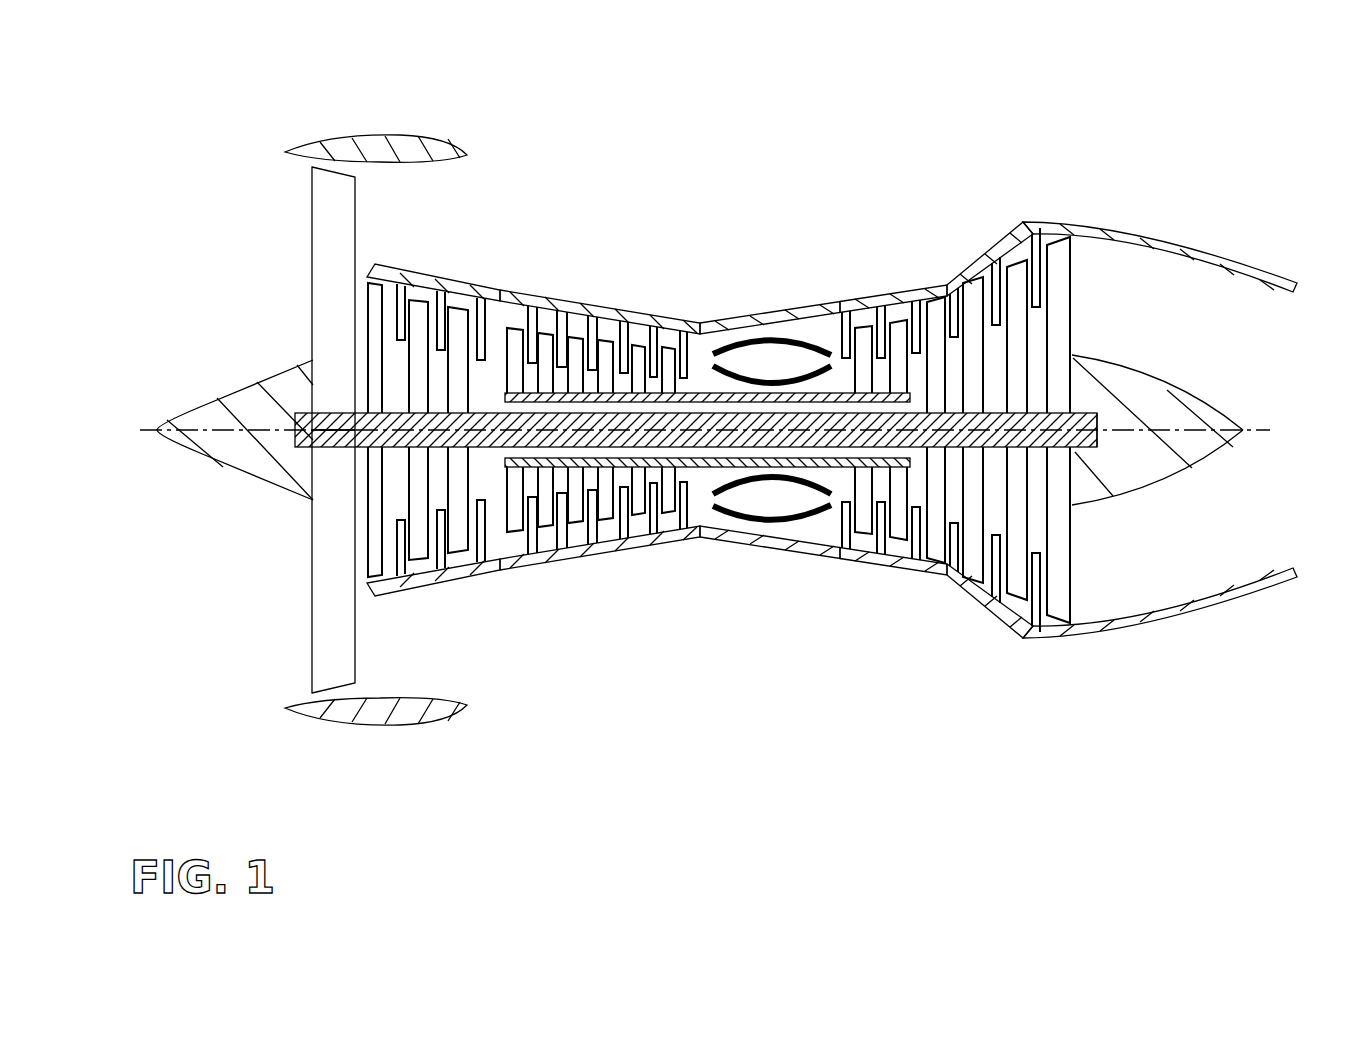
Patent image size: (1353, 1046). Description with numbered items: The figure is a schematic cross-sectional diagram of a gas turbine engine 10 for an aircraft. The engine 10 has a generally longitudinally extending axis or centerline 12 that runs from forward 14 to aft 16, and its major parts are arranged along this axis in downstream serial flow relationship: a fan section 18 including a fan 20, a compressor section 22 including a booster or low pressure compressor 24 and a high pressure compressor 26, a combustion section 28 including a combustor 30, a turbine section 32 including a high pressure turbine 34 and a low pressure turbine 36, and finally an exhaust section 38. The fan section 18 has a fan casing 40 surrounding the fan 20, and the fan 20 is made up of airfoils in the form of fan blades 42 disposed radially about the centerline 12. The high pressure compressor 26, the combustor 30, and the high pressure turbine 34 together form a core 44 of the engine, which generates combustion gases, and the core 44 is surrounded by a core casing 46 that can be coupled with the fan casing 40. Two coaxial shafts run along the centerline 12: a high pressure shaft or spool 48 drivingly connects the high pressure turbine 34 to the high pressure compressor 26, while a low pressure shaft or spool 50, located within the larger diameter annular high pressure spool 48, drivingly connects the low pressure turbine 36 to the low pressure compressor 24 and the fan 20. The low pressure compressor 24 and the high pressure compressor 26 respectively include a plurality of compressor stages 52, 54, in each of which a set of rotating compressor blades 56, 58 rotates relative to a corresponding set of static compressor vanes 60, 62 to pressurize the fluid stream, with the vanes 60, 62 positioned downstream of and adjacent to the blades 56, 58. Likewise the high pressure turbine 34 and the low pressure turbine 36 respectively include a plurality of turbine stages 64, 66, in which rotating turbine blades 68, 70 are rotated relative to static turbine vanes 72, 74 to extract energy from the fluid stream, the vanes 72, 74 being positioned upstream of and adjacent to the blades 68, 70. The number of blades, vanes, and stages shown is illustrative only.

The gas turbine engine 10 is at (203, 75).
The centerline 12 is at (217, 413).
The forward 14 is at (175, 430).
The aft 16 is at (1232, 430).
The fan section 18 is at (360, 762).
The fan 20 is at (302, 225).
The compressor section 22 is at (364, 762).
The low pressure compressor 24 is at (492, 572).
The high pressure compressor 26 is at (645, 538).
The combustion section 28 is at (853, 762).
The combustor 30 is at (822, 335).
The turbine section 32 is at (1065, 762).
The high pressure turbine 34 is at (838, 568).
The low pressure turbine 36 is at (958, 603).
The exhaust section 38 is at (1069, 762).
The fan casing 40 is at (378, 137).
The fan blades 42 is at (324, 638).
The core 44 is at (910, 638).
The core casing 46 is at (752, 322).
The high pressure shaft 48 is at (700, 392).
The low pressure shaft 50 is at (487, 412).
The compressor stages 52 is at (368, 258).
The compressor stages 54 is at (515, 296).
The compressor blades 56 is at (382, 288).
The compressor blades 58 is at (525, 328).
The compressor vanes 60 is at (405, 320).
The compressor vanes 62 is at (537, 333).
The turbine stages 64 is at (870, 288).
The turbine stages 66 is at (995, 233).
The turbine blades 68 is at (900, 330).
The turbine blades 70 is at (1013, 283).
The turbine vanes 72 is at (882, 327).
The turbine vanes 74 is at (1000, 275).